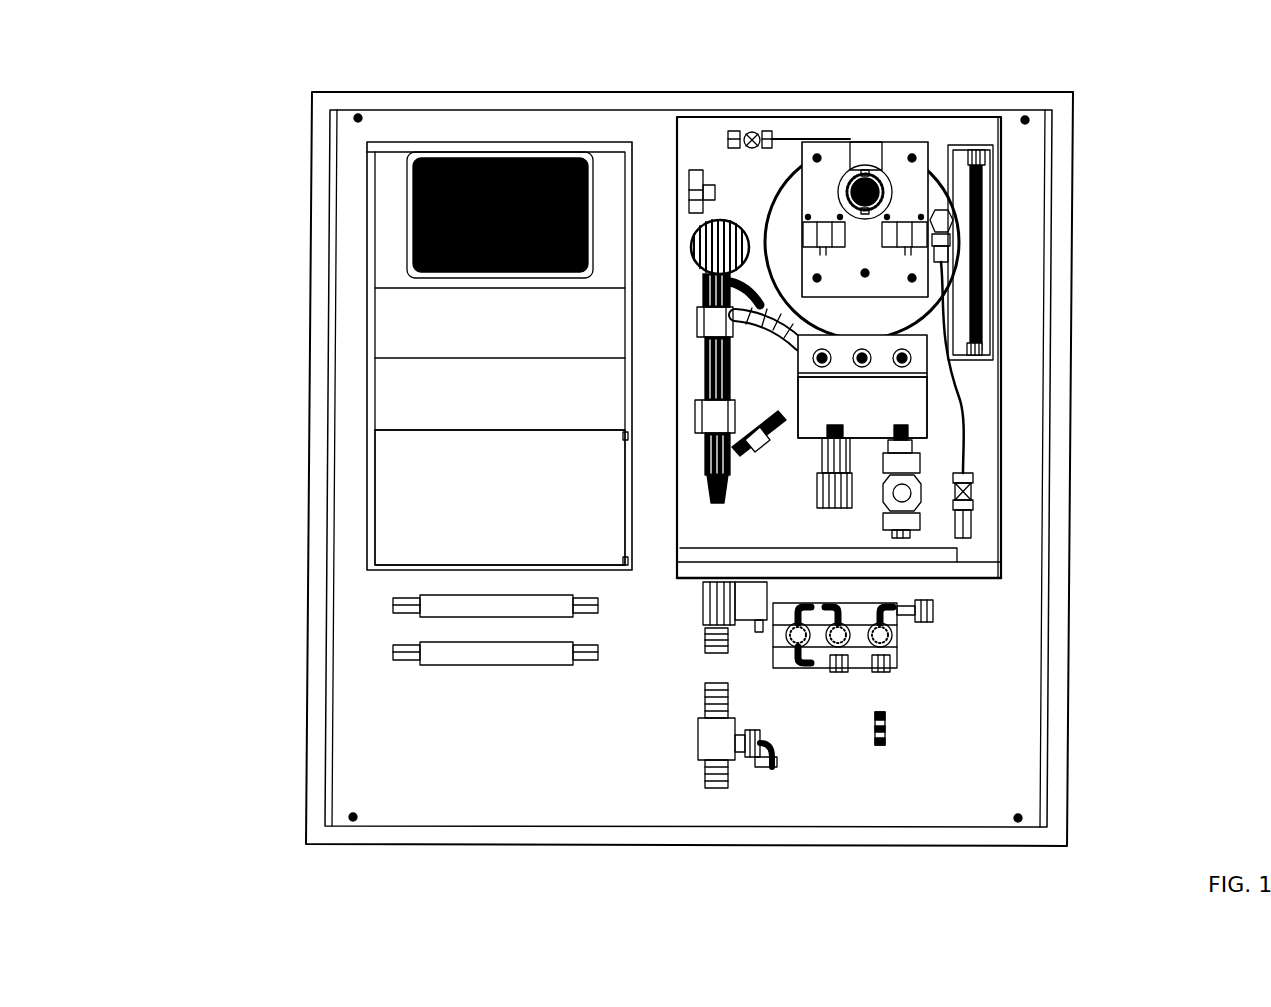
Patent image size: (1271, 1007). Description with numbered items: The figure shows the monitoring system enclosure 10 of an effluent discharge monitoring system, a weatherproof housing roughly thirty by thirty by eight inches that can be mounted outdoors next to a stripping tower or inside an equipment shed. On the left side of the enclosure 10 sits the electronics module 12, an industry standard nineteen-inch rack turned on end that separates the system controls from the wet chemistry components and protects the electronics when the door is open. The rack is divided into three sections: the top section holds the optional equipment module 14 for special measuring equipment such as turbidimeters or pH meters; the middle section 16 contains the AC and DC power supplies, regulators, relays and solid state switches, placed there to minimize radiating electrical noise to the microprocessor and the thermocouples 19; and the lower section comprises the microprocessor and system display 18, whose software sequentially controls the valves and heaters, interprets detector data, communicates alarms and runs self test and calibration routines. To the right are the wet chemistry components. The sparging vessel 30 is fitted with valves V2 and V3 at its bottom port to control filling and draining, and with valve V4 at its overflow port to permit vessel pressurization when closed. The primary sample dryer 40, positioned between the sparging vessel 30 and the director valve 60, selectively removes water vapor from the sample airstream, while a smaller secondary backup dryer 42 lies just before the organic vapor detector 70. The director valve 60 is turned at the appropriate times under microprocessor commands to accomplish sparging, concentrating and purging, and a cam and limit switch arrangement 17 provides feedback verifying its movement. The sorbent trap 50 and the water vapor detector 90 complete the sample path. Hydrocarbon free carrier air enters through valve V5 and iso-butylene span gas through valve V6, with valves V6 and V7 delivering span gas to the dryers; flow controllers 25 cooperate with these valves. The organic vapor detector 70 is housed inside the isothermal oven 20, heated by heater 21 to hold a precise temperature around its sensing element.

The enclosure 10 is at (317, 848).
The electronics module 12 is at (360, 148).
The optional equipment module 14 is at (384, 215).
The middle section 16 is at (385, 380).
The microprocessor and system display 18 is at (385, 455).
The thermocouples 19 is at (380, 652).
The isothermal oven 20 is at (1180, 561).
The heater 21 is at (946, 601).
The flow controllers 25 is at (1009, 386).
The sparging vessel 30 is at (690, 270).
The primary sample dryer 40 is at (742, 125).
The secondary backup dryer 42 is at (982, 519).
The sorbent trap 50 is at (985, 290).
The director valve 60 is at (1010, 217).
The cam and limit switch arrangement 17 is at (1029, 200).
The organic vapor detector 70 is at (925, 465).
The water vapor detector 90 is at (1007, 407).
The valve V2 is at (713, 794).
The valve V3 is at (625, 743).
The valve V4 is at (751, 607).
The valve V5 is at (903, 658).
The valve V6 is at (837, 639).
The valve V7 is at (880, 639).